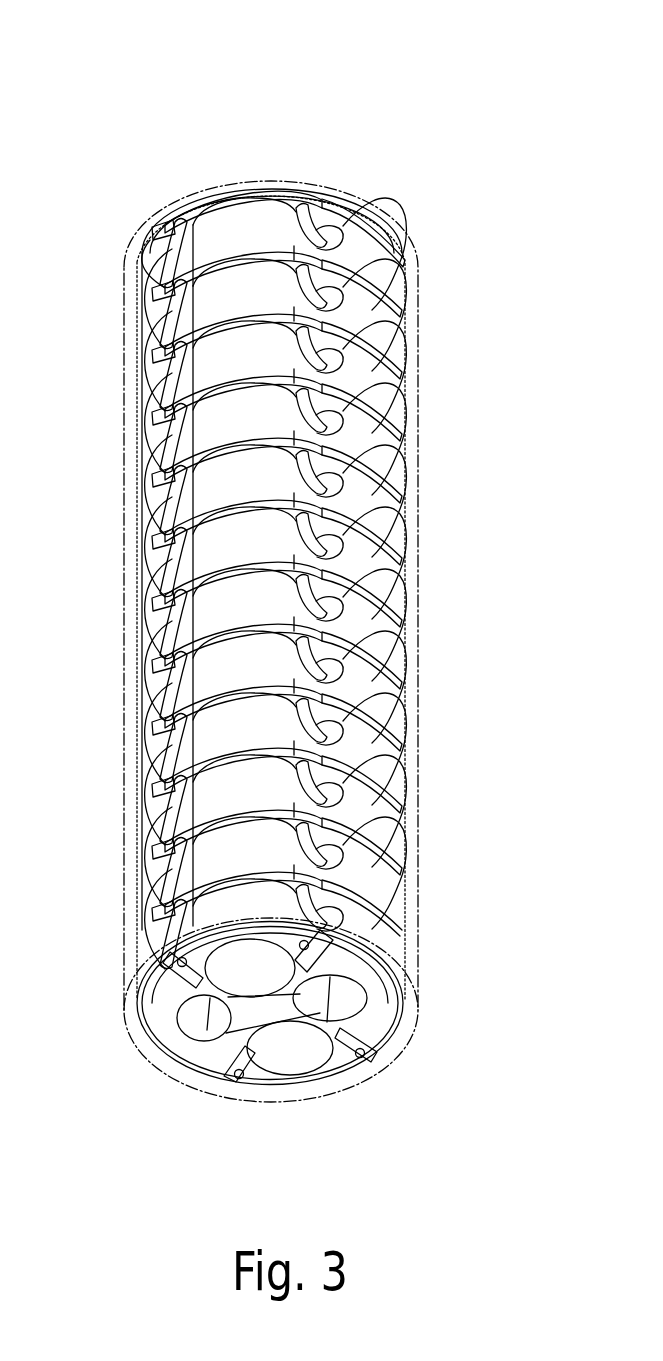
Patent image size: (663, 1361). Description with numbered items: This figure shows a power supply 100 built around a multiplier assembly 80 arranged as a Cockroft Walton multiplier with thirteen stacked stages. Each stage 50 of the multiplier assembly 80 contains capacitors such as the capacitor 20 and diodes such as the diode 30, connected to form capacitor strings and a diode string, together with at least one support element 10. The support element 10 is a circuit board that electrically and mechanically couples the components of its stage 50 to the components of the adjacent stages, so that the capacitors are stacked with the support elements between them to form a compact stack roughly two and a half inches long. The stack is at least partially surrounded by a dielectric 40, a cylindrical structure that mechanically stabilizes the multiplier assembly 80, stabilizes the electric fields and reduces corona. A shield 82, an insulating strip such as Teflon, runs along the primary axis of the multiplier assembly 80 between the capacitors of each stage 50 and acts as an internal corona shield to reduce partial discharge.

The power supply 100 is at (393, 137).
The dielectric 40 is at (122, 415).
The multiplier assembly 80 is at (434, 1022).
The capacitor 20 is at (233, 905).
The diode 30 is at (380, 932).
The stage 50 is at (118, 938).
The support element 10 is at (193, 1052).
The shield 82 is at (313, 1005).